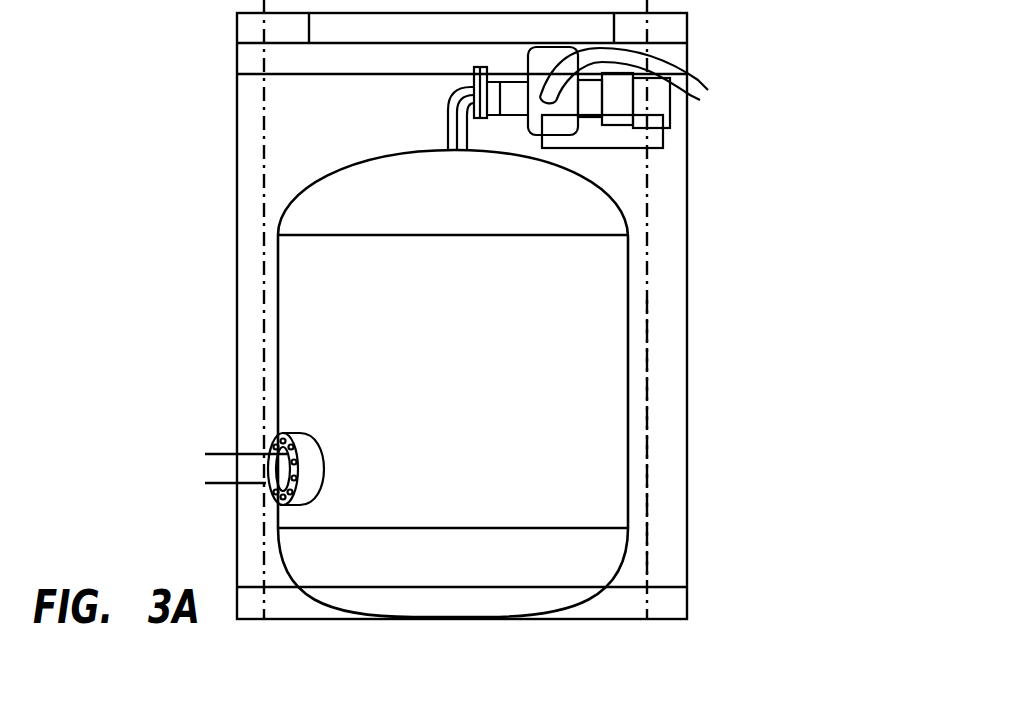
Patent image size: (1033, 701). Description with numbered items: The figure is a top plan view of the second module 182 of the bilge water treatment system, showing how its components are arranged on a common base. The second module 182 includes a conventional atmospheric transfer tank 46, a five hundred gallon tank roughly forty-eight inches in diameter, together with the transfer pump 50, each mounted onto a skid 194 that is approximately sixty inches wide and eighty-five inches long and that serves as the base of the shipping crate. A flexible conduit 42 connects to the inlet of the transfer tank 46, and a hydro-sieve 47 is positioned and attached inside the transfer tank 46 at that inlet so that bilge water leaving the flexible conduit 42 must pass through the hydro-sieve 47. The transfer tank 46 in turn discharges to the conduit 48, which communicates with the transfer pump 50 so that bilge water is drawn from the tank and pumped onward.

The second module 182 is at (718, 245).
The skid 194 is at (658, 541).
The atmospheric transfer tank 46 is at (598, 332).
The hydro-sieve 47 is at (282, 432).
The flexible conduit 42 is at (220, 465).
The conduit 48 is at (455, 88).
The transfer pump 50 is at (617, 113).